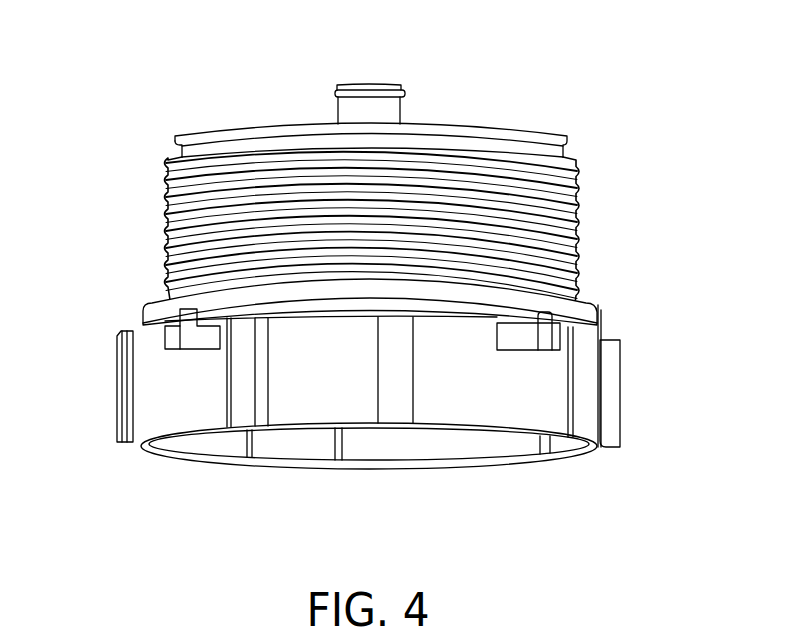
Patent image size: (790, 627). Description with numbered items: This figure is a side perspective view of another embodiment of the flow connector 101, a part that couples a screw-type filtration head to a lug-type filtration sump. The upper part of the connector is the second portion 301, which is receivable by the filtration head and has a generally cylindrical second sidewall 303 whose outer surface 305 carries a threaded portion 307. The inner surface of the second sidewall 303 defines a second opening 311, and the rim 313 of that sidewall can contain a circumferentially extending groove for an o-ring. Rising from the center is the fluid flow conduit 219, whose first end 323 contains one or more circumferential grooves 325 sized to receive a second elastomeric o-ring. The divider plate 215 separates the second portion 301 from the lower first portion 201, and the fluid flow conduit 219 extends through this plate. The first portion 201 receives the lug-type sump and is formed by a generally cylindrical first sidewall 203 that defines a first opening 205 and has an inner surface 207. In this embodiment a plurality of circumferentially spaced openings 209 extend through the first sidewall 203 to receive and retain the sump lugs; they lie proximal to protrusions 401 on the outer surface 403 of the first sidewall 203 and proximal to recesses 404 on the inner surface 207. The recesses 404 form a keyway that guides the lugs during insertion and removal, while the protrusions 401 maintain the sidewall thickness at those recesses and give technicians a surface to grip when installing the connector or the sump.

The flow connector 101 is at (63, 245).
The first portion 201 is at (97, 333).
The generally cylindrical first sidewall 203 is at (295, 388).
The first opening 205 is at (360, 443).
The inner surface 207 is at (460, 443).
The circumferentially spaced openings 209 is at (572, 328).
The divider plate 215 is at (145, 298).
The fluid flow conduit 219 is at (385, 83).
The second portion 301 is at (605, 140).
The generally cylindrical second sidewall 303 is at (537, 137).
The outer surface 305 is at (575, 268).
The threaded portion 307 is at (167, 203).
The second opening 311 is at (215, 137).
The rim 313 is at (488, 125).
The first end 323 is at (352, 83).
The circumferential grooves 325 is at (332, 95).
The protrusions 401 is at (167, 390).
The outer surface 403 is at (547, 437).
The recesses 404 is at (587, 455).